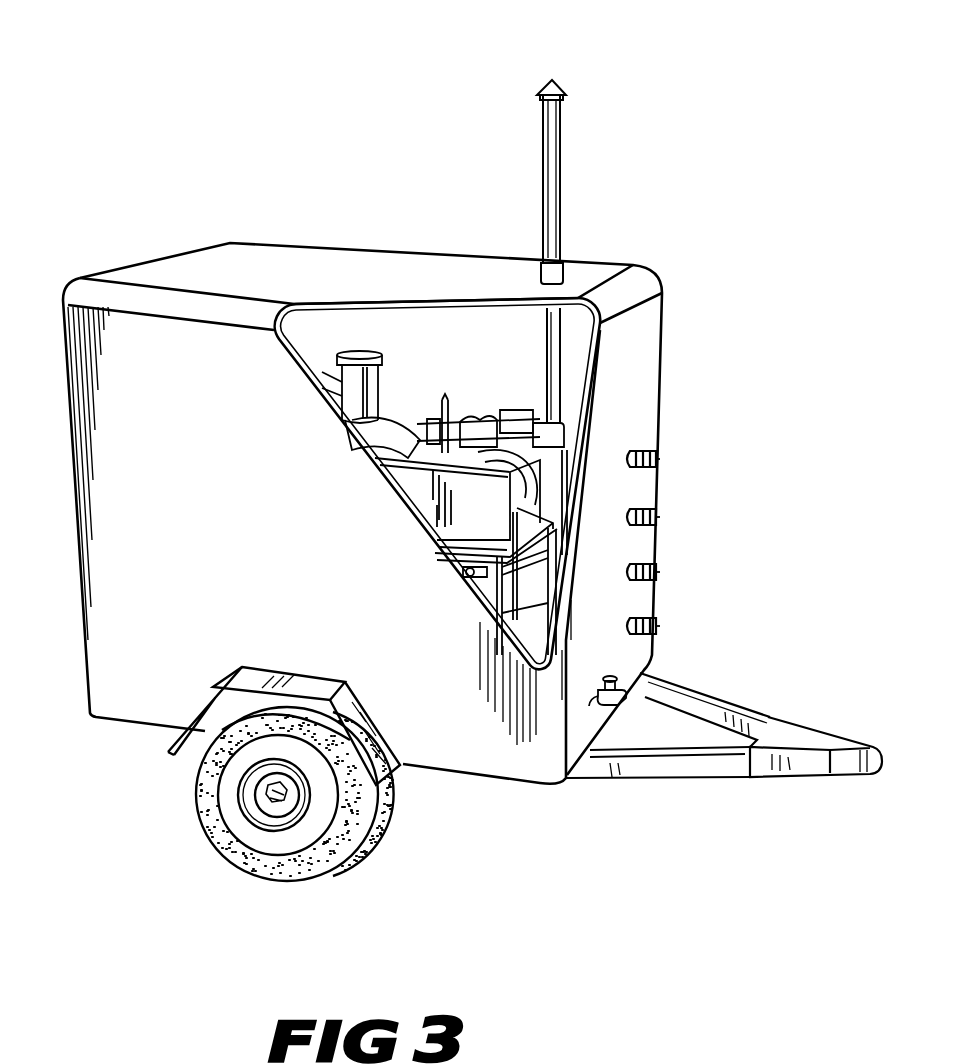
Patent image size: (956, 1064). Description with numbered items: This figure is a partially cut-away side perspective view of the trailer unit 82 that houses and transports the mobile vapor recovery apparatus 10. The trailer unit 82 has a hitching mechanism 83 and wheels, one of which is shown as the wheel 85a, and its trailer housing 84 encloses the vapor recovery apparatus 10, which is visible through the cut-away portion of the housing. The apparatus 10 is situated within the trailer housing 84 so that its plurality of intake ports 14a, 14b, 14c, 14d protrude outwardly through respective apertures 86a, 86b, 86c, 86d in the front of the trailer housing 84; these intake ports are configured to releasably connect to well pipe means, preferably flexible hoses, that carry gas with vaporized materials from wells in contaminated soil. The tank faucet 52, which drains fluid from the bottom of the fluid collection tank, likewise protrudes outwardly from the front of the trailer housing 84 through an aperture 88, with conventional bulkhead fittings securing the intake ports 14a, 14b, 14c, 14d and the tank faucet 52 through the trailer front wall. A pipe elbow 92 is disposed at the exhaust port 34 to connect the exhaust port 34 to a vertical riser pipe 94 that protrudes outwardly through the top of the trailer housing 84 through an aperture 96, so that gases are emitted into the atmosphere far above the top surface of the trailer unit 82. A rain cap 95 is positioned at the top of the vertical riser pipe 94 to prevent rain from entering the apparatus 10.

The vapor recovery apparatus 10 is at (428, 378).
The intake port 14a is at (658, 631).
The intake port 14b is at (658, 576).
The intake port 14c is at (658, 519).
The intake port 14d is at (658, 460).
The exhaust port 34 is at (556, 90).
The tank faucet 52 is at (664, 680).
The trailer unit 82 is at (738, 296).
The hitching mechanism 83 is at (802, 744).
The trailer housing 84 is at (474, 748).
The wheel 85a is at (347, 856).
The aperture 86a is at (630, 627).
The aperture 86b is at (630, 573).
The aperture 86c is at (630, 518).
The aperture 86d is at (640, 451).
The aperture 88 is at (598, 693).
The pipe elbow 92 is at (588, 430).
The vertical riser pipe 94 is at (553, 217).
The rain cap 95 is at (549, 84).
The aperture 96 is at (563, 276).